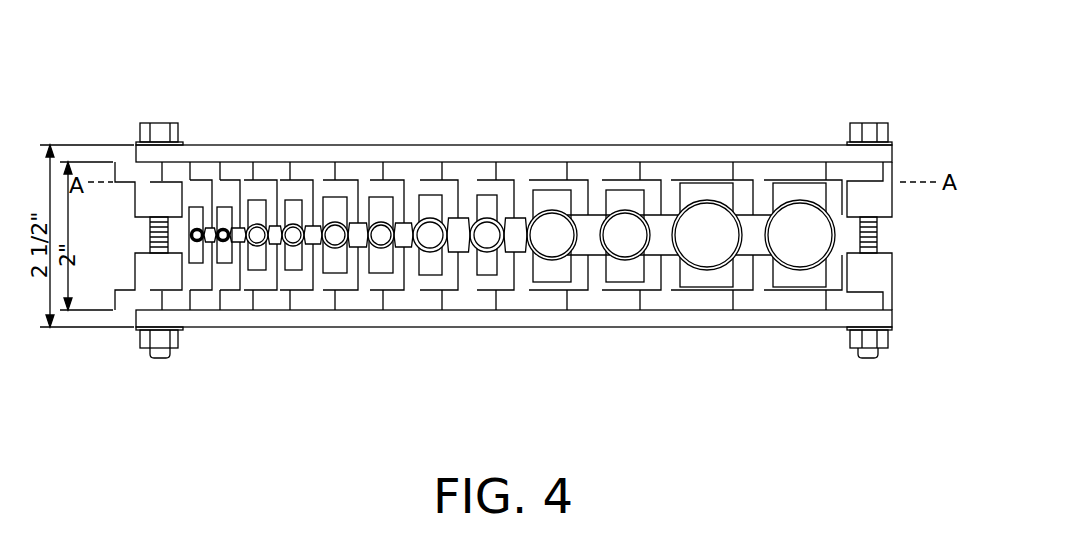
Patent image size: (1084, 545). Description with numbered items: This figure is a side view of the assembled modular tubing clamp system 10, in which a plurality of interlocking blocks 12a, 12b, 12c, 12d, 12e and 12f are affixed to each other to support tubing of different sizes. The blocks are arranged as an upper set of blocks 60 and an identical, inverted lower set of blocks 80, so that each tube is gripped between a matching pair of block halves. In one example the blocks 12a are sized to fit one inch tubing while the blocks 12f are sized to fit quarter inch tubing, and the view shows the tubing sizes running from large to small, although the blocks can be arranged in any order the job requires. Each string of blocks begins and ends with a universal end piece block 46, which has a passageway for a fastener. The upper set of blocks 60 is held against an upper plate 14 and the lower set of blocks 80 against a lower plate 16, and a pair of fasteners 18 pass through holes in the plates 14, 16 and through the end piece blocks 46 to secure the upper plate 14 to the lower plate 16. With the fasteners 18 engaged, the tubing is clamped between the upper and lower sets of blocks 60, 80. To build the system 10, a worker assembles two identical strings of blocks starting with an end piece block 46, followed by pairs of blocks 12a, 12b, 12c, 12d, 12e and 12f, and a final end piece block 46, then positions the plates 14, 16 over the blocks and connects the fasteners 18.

The modular tubing clamp system 10 is at (925, 100).
The blocks 12a is at (782, 174).
The blocks 12b is at (597, 172).
The blocks 12c is at (457, 178).
The blocks 12d is at (337, 178).
The blocks 12e is at (252, 185).
The blocks 12f is at (201, 172).
The upper plate 14 is at (664, 145).
The lower plate 16 is at (688, 328).
The fasteners 18 is at (159, 122).
The universal end piece block 46 is at (135, 210).
The upper set of blocks 60 is at (905, 202).
The lower set of blocks 80 is at (905, 302).